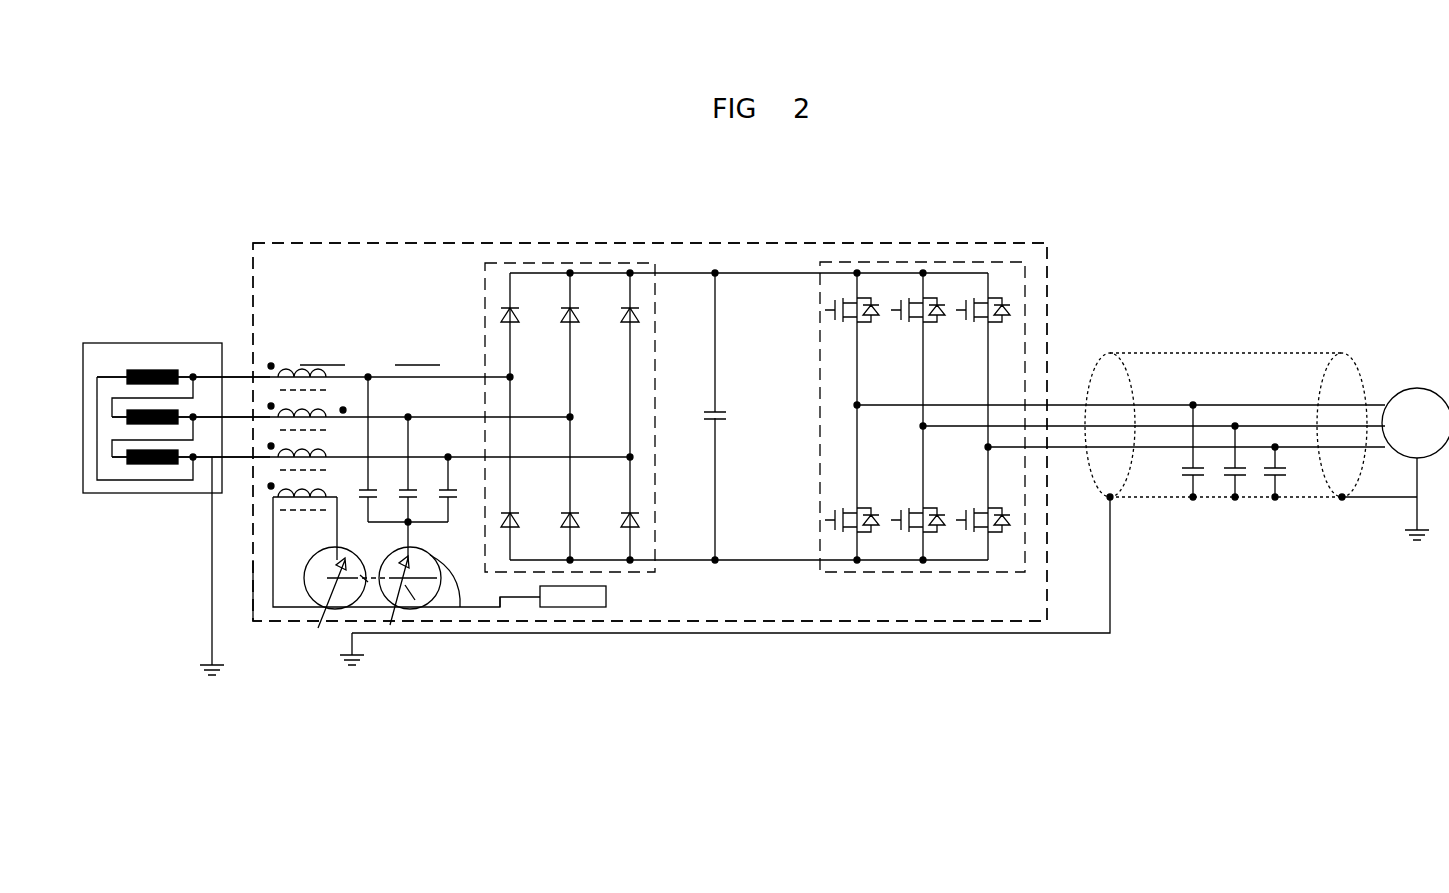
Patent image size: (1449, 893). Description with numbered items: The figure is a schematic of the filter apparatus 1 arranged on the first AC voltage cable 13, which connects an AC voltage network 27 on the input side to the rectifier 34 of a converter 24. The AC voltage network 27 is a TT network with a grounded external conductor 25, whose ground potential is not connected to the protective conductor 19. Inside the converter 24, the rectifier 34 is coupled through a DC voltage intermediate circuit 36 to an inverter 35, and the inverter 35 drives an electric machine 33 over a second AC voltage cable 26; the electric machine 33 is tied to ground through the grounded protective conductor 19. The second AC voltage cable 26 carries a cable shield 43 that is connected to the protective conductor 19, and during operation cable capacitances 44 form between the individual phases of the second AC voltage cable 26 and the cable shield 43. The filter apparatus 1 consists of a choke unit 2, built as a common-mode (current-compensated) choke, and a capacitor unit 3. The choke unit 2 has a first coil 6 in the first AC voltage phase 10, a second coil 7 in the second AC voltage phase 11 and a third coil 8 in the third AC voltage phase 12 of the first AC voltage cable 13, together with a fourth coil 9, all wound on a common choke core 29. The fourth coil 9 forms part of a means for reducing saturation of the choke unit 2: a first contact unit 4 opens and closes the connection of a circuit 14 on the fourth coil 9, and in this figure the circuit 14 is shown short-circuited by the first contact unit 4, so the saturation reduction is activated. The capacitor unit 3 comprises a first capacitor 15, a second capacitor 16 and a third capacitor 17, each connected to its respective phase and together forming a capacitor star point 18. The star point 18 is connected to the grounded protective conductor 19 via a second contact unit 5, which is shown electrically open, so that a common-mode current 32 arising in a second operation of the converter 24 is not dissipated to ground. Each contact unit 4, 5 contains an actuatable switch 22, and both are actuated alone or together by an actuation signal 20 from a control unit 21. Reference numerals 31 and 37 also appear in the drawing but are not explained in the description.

The filter apparatus 1 is at (372, 350).
The choke unit 2 is at (314, 376).
The capacitor unit 3 is at (414, 352).
The first contact unit 4 is at (300, 608).
The second contact unit 5 is at (458, 608).
The first coil 6 is at (298, 362).
The second coil 7 is at (323, 400).
The third coil 8 is at (318, 458).
The fourth coil 9 is at (288, 503).
The first AC voltage phase 10 is at (208, 377).
The second AC voltage phase 11 is at (240, 413).
The third AC voltage phase 12 is at (240, 460).
The first AC voltage cable 13 is at (183, 417).
The circuit 14 is at (257, 563).
The first capacitor 15 is at (372, 487).
The second capacitor 16 is at (412, 487).
The third capacitor 17 is at (450, 487).
The capacitor star point 18 is at (412, 524).
The grounded protective conductor 19 is at (762, 634).
The actuation signal 20 is at (528, 598).
The control unit 21 is at (606, 597).
The actuatable switch 22 is at (327, 605).
The converter 24 is at (460, 243).
The grounded external conductor 25 is at (203, 482).
The second AC voltage cable 26 is at (1055, 403).
The AC voltage network 27 is at (113, 343).
The common choke core 29 is at (343, 392).
The first measuring element 31 is at (370, 570).
The current 32 is at (412, 612).
The electric machine 33 is at (1420, 388).
The rectifier 34 is at (585, 272).
The inverter 35 is at (905, 272).
The DC voltage intermediate circuit 36 is at (767, 272).
The converter housing 37 is at (650, 432).
The cable shield 43 is at (1237, 353).
The cable capacitances 44 is at (1193, 497).